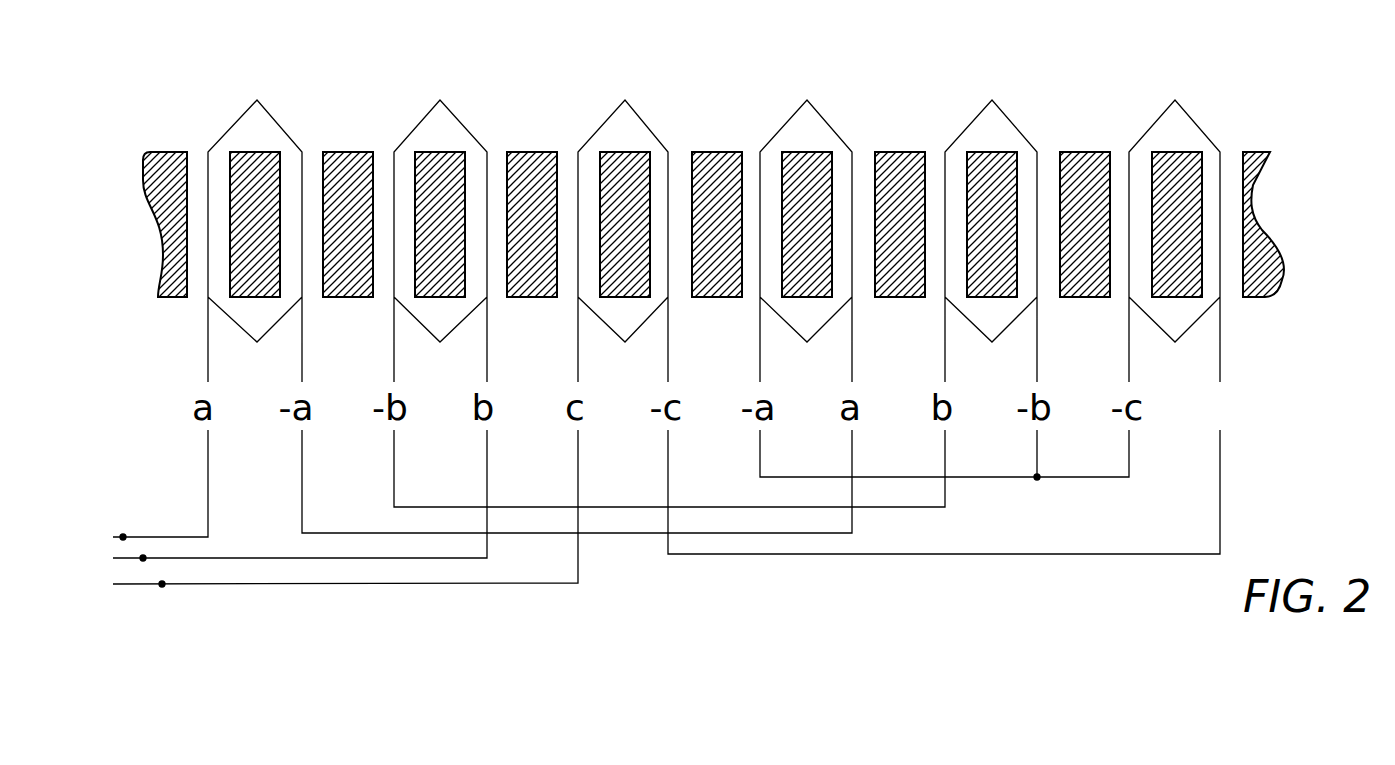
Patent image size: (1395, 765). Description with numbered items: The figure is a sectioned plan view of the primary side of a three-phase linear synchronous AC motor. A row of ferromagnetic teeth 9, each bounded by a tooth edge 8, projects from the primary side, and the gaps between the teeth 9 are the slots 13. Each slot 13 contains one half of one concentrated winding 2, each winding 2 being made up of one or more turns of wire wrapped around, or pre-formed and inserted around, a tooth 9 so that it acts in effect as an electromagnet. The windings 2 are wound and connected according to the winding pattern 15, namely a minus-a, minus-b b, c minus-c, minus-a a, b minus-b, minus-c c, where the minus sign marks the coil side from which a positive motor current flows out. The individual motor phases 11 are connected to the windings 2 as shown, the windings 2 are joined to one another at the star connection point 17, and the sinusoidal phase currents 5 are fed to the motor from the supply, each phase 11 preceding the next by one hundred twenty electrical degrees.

The concentrated winding 2 is at (285, 135).
The motor supply phases 5 is at (162, 584).
The tooth edge 8 is at (872, 165).
The tooth 9 is at (537, 177).
The phase current 11 is at (172, 532).
The slot 13 is at (495, 174).
The winding pattern 15 is at (1240, 401).
The star connection point 17 is at (1040, 487).